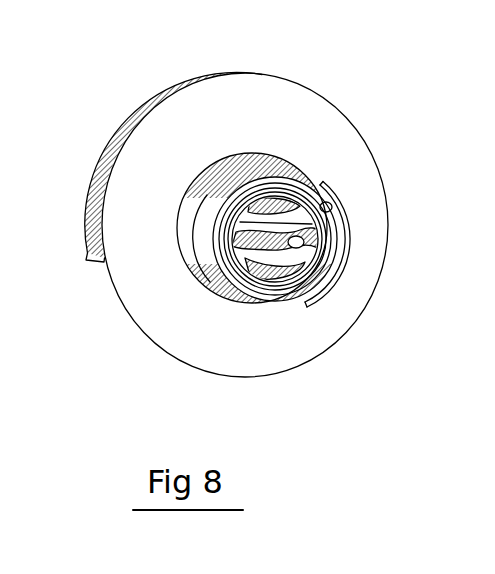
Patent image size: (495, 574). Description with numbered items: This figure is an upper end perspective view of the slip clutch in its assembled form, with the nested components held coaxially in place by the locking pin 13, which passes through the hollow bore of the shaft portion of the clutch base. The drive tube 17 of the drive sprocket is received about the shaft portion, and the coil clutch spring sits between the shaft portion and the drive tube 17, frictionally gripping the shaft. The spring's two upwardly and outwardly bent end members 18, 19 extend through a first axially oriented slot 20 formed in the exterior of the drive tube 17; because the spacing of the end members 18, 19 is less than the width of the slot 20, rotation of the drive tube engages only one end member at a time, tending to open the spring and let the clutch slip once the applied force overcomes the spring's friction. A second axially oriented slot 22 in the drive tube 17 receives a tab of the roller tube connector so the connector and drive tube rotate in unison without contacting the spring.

The locking pin 13 is at (310, 288).
The drive tube 17 is at (190, 230).
The end member 18 is at (243, 158).
The end member 19 is at (330, 200).
The first axially oriented slot 20 is at (227, 162).
The second axially oriented slot 22 is at (243, 297).